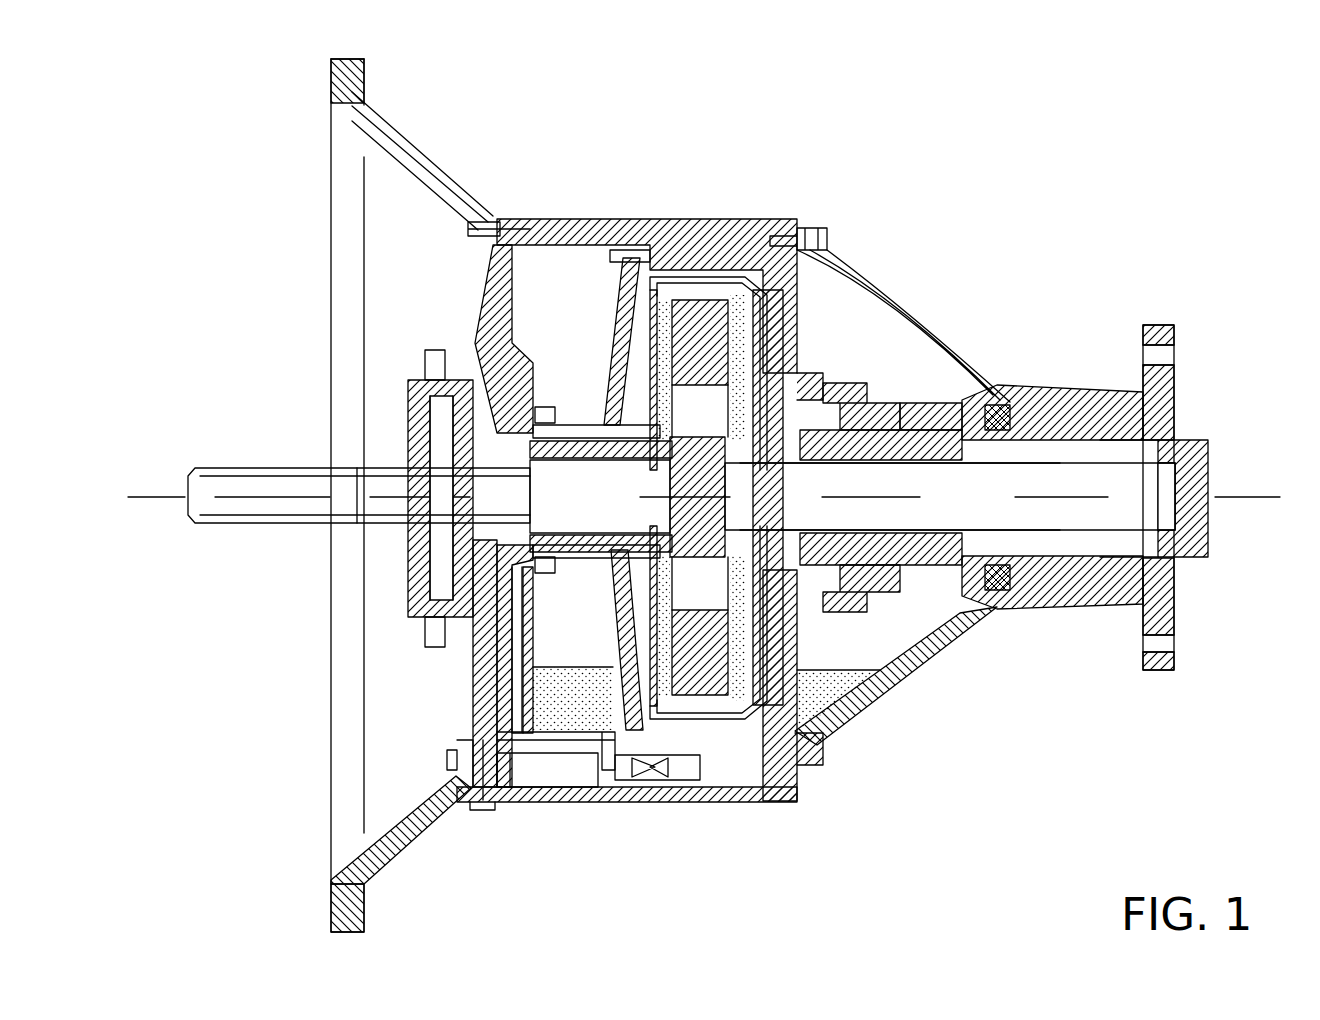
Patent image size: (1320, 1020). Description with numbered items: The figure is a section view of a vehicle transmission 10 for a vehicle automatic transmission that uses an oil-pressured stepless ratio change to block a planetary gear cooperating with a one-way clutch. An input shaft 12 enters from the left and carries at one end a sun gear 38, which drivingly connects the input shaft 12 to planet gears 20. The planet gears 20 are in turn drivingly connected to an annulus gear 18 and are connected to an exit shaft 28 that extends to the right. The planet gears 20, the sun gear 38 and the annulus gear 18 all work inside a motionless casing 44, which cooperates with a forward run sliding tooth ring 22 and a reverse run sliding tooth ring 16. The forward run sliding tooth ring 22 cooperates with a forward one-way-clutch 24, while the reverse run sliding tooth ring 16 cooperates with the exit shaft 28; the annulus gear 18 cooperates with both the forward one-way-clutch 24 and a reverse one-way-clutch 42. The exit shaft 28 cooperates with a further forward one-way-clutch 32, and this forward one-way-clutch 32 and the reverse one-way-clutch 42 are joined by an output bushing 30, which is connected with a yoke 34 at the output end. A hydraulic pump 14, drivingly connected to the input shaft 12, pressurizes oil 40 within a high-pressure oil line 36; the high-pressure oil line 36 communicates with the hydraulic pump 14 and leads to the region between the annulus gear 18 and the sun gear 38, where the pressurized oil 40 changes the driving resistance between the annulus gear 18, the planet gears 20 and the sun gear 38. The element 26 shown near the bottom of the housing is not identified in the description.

The vehicle transmission 10 is at (1000, 168).
The input shaft 12 is at (238, 468).
The hydraulic pump 14 is at (440, 428).
The reverse run sliding tooth ring 16 is at (584, 416).
The annulus gear 18 is at (717, 290).
The planet gears 20 is at (700, 322).
The forward run sliding tooth ring 22 is at (848, 396).
The forward one-way-clutch 24 is at (906, 455).
The fastener 26 is at (652, 778).
The exit shaft 28 is at (1160, 464).
The output bushing 30 is at (978, 606).
The forward one-way-clutch 32 is at (1050, 572).
The yoke 34 is at (1176, 600).
The high-pressure oil line 36 is at (537, 772).
The sun gear 38 is at (692, 510).
The oil 40 is at (500, 668).
The reverse one-way-clutch 42 is at (1010, 575).
The motionless casing 44 is at (542, 220).